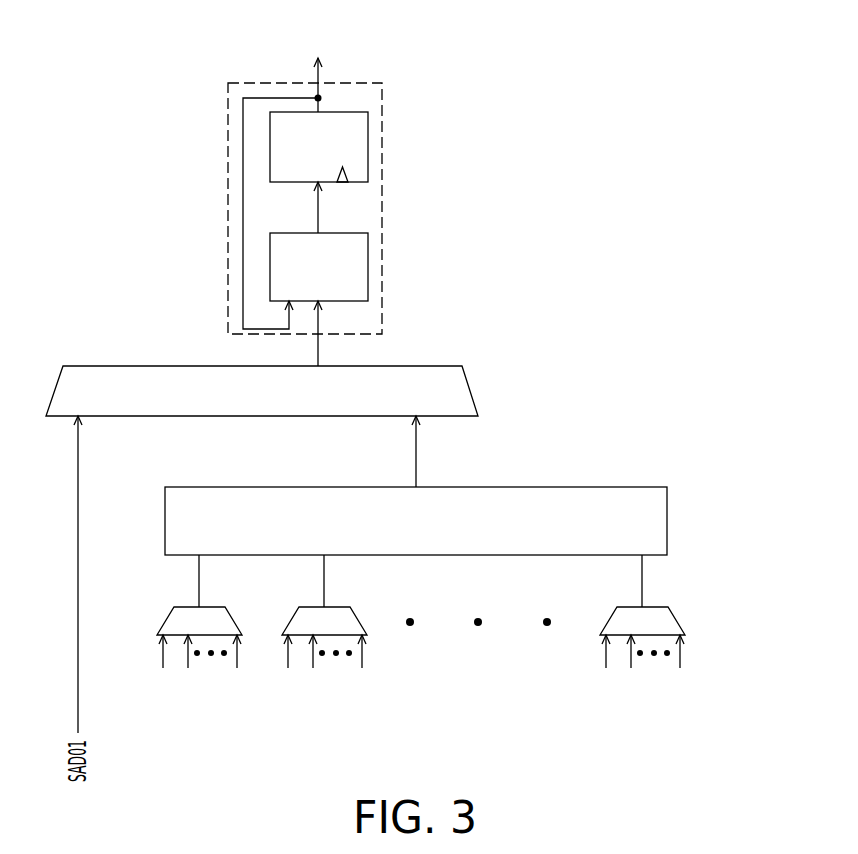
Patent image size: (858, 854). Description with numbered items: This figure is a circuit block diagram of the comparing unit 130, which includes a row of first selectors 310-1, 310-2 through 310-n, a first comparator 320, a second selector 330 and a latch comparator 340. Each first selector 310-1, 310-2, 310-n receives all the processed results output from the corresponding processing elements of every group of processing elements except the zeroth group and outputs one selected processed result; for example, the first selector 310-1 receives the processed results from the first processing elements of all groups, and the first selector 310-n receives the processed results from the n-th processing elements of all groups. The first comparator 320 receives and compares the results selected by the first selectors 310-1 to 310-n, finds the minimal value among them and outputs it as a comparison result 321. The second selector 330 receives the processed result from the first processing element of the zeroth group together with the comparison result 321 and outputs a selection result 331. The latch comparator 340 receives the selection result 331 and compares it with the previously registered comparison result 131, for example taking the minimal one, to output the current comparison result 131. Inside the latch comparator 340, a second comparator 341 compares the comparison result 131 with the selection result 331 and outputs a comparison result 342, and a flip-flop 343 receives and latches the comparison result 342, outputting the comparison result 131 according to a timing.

The comparison result 131 is at (317, 64).
The latch comparator 340 is at (383, 106).
The flip-flop 343 is at (368, 145).
The comparison result 342 is at (320, 207).
The second comparator 341 is at (368, 266).
The selection result 331 is at (320, 355).
The second selector 330 is at (470, 390).
The comparison result 321 is at (417, 448).
The first comparator 320 is at (668, 515).
The first selector 310-1 is at (163, 623).
The first selector 310-2 is at (360, 620).
The first selector 310-n is at (683, 620).
The comparing unit 130 is at (824, 756).